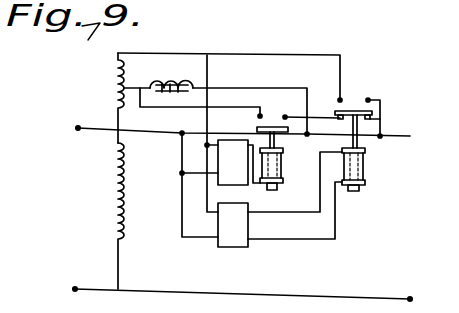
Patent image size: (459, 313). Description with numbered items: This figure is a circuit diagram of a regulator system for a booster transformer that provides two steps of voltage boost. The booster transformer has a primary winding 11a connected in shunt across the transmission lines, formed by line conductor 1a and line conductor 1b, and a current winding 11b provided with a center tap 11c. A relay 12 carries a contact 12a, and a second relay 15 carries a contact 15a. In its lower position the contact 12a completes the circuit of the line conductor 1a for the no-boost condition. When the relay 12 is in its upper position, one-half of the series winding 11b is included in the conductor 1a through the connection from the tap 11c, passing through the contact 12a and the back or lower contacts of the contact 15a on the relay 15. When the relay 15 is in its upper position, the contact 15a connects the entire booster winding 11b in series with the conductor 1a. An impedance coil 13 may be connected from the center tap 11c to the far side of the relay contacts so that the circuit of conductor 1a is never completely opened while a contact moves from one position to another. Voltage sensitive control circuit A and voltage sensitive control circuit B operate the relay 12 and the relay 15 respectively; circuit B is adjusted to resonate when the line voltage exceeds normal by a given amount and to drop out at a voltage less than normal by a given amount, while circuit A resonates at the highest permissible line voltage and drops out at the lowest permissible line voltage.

The line conductor 1a is at (91, 128).
The line conductor 1b is at (92, 288).
The primary winding 11a is at (117, 193).
The current winding 11b is at (117, 84).
The center tap 11c is at (135, 84).
The impedance coil 13 is at (160, 83).
The relay 12 is at (284, 158).
The contact 12a is at (273, 124).
The relay 15 is at (366, 169).
The contact 15a is at (350, 110).
The voltage sensitive control circuit A is at (233, 162).
The voltage sensitive control circuit B is at (233, 225).